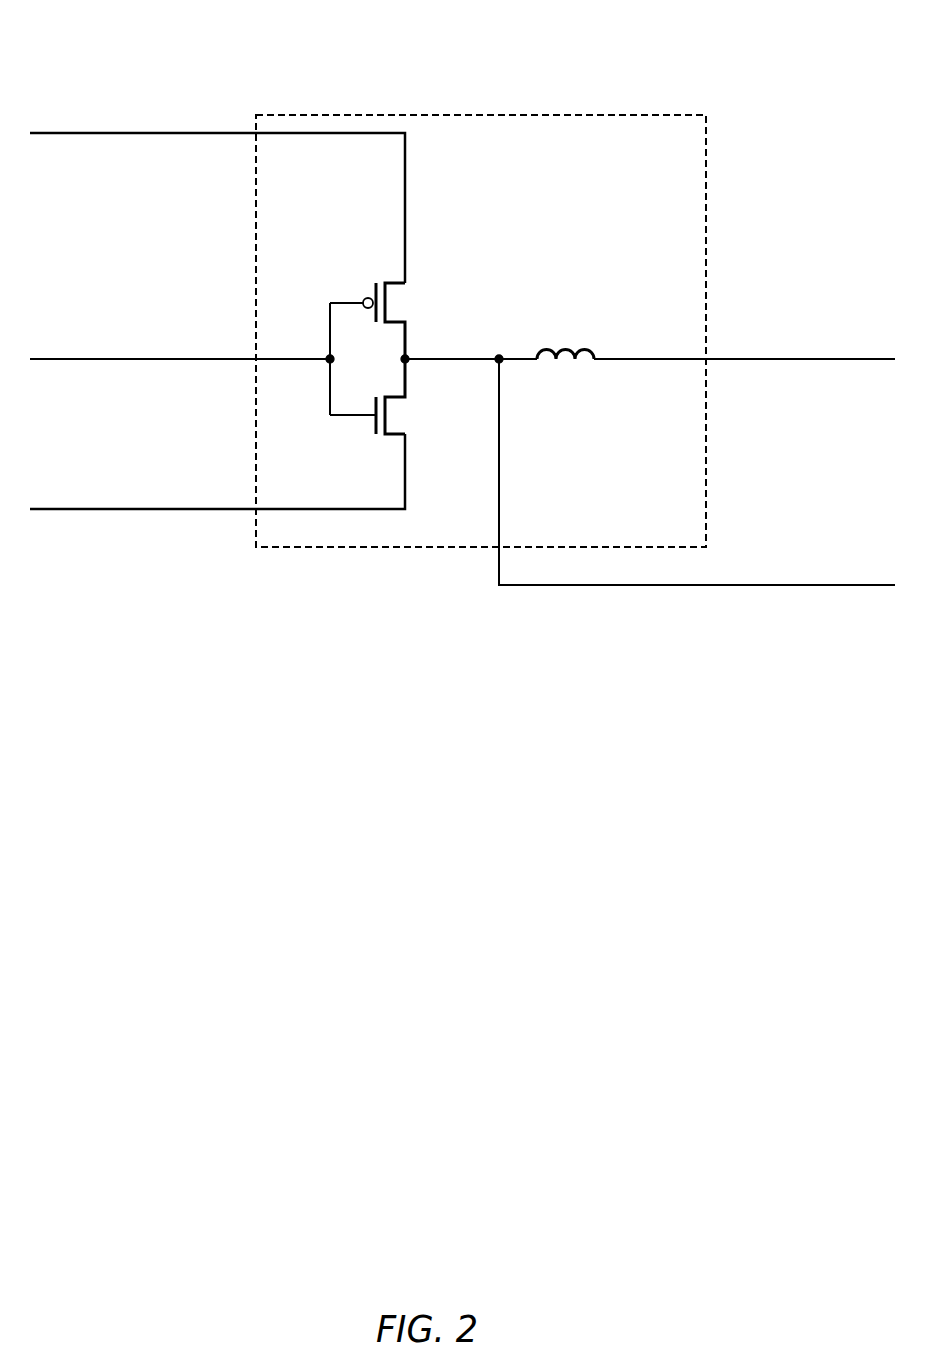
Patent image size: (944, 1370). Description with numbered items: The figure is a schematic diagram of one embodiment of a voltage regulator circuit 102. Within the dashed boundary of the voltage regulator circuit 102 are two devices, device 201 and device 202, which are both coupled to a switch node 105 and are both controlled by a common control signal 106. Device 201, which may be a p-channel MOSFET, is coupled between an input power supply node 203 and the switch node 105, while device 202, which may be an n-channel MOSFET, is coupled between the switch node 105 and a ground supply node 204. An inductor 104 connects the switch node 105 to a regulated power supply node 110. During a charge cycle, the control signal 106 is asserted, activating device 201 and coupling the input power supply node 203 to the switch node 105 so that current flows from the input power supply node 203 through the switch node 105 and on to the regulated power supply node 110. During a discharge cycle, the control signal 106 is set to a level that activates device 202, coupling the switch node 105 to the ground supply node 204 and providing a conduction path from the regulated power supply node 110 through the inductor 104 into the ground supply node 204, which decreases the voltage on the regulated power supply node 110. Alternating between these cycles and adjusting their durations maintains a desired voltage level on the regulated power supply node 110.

The voltage regulator circuit 102 is at (533, 115).
The input power supply node 203 is at (217, 183).
The control signal 106 is at (203, 359).
The ground supply node 204 is at (217, 485).
The device 201 is at (397, 305).
The device 202 is at (397, 416).
The inductor 104 is at (566, 362).
The regulated power supply node 110 is at (744, 349).
The switch node 105 is at (697, 484).